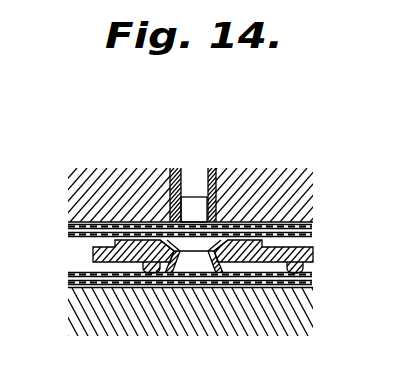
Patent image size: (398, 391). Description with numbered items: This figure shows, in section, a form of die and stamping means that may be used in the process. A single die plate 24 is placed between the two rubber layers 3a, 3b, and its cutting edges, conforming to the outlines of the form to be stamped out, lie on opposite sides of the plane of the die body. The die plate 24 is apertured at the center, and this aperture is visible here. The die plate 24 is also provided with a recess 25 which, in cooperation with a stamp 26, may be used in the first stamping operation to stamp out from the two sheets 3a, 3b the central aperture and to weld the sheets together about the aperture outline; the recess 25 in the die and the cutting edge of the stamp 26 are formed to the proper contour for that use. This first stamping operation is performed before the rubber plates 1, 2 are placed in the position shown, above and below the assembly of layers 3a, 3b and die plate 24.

The rubber plate 1 is at (318, 283).
The rubber plate 2 is at (313, 222).
The rubber layer 3a is at (314, 274).
The rubber layer 3b is at (72, 237).
The die plate 24 is at (318, 250).
The recess 25 is at (242, 273).
The stamp 26 is at (217, 197).